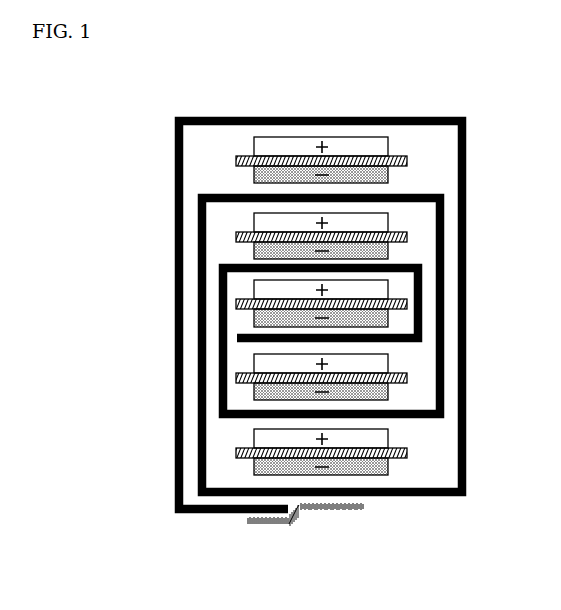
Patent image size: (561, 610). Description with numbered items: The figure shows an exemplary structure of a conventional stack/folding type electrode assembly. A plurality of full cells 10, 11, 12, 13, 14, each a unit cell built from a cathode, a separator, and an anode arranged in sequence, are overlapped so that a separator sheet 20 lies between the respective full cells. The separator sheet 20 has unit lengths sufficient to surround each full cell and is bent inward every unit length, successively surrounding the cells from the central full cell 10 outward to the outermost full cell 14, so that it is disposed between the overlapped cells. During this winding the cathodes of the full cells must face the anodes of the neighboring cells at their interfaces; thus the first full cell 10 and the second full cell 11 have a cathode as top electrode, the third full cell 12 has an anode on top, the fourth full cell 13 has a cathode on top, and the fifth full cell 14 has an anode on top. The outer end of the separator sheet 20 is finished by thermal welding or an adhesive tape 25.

The first full cell 10 is at (388, 292).
The second full cell 11 is at (388, 370).
The third full cell 12 is at (388, 219).
The fourth full cell 13 is at (388, 442).
The fifth full cell 14 is at (388, 147).
The separator sheet 20 is at (175, 240).
The adhesive tape 25 is at (298, 513).